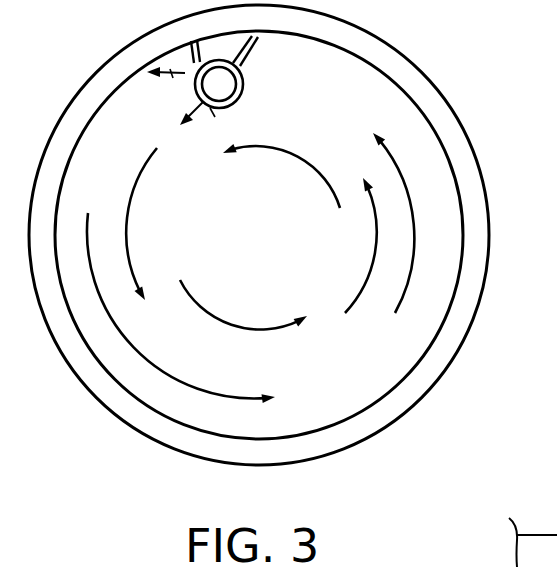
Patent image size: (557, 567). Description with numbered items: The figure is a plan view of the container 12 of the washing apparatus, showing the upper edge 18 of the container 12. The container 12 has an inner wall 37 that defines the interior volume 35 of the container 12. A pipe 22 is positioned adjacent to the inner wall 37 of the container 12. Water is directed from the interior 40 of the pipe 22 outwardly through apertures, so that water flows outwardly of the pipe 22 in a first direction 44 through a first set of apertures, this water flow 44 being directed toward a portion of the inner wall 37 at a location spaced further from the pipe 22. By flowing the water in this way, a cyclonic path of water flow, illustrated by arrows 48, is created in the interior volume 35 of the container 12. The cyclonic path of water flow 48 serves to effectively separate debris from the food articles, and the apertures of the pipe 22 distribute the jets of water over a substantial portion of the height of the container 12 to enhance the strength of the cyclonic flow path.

The container 12 is at (413, 82).
The upper edge 18 is at (473, 187).
The pipe 22 is at (245, 78).
The interior volume 35 is at (422, 313).
The inner wall 37 is at (383, 395).
The interior 40 is at (222, 72).
The first direction 44 is at (180, 120).
The cyclonic path of water flow 48 is at (127, 225).